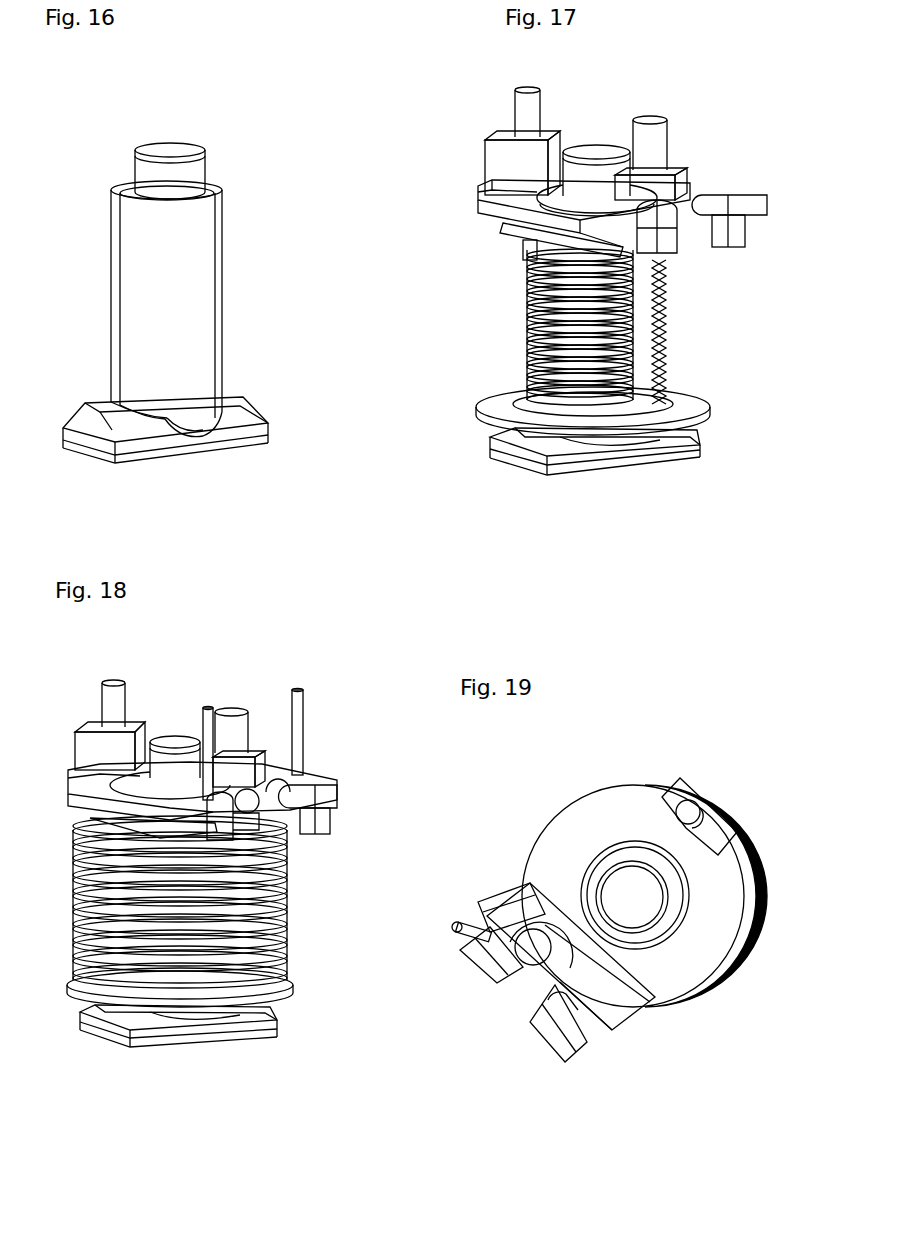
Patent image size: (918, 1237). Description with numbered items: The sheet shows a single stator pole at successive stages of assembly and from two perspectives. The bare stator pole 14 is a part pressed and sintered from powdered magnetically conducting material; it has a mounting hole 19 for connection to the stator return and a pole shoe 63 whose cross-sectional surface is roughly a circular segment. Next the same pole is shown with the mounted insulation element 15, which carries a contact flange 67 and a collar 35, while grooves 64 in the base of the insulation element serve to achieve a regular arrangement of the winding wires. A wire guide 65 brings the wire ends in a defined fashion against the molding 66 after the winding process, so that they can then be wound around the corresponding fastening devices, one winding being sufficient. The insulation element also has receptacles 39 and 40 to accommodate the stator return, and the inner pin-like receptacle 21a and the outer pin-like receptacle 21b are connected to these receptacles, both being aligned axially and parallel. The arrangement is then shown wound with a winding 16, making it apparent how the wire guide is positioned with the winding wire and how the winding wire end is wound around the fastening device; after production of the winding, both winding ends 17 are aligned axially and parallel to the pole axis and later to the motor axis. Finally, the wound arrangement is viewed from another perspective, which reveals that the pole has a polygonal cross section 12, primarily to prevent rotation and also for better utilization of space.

In FIG. 16, the polygonal cross section 12 is at (118, 188).
In FIG. 19, the polygonal cross section 12 is at (650, 857).
In FIG. 16, the stator pole 14 is at (104, 276).
In FIG. 17, the stator pole 14 is at (592, 482).
In FIG. 17, the insulation element 15 is at (676, 309).
In FIG. 18, the winding 16 is at (222, 910).
In FIG. 18, the winding ends 17 is at (207, 713).
In FIG. 19, the winding ends 17 is at (458, 932).
In FIG. 16, the mounting hole 19 is at (176, 175).
In FIG. 17, the mounting hole 19 is at (590, 150).
In FIG. 18, the mounting hole 19 is at (177, 740).
In FIG. 19, the mounting hole 19 is at (636, 898).
In FIG. 17, the inner pin-like receptacle 21a is at (520, 110).
In FIG. 18, the inner pin-like receptacle 21a is at (112, 695).
In FIG. 19, the inner pin-like receptacle 21a is at (690, 812).
In FIG. 17, the outer pin-like receptacle 21b is at (648, 138).
In FIG. 18, the outer pin-like receptacle 21b is at (237, 730).
In FIG. 19, the outer pin-like receptacle 21b is at (532, 958).
In FIG. 17, the collar 35 is at (688, 397).
In FIG. 17, the receptacle 39 is at (527, 163).
In FIG. 18, the receptacle 39 is at (123, 747).
In FIG. 19, the receptacle 39 is at (705, 840).
In FIG. 17, the receptacle 40 is at (583, 205).
In FIG. 18, the receptacle 40 is at (280, 763).
In FIG. 19, the receptacle 40 is at (548, 905).
In FIG. 16, the pole shoe 63 is at (230, 417).
In FIG. 17, the pole shoe 63 is at (500, 443).
In FIG. 18, the pole shoe 63 is at (103, 1027).
In FIG. 17, the grooves 64 is at (662, 357).
In FIG. 17, the wire guide 65 is at (503, 228).
In FIG. 17, the molding 66 is at (734, 192).
In FIG. 18, the molding 66 is at (309, 805).
In FIG. 19, the molding 66 is at (490, 962).
In FIG. 17, the contact flange 67 is at (568, 197).